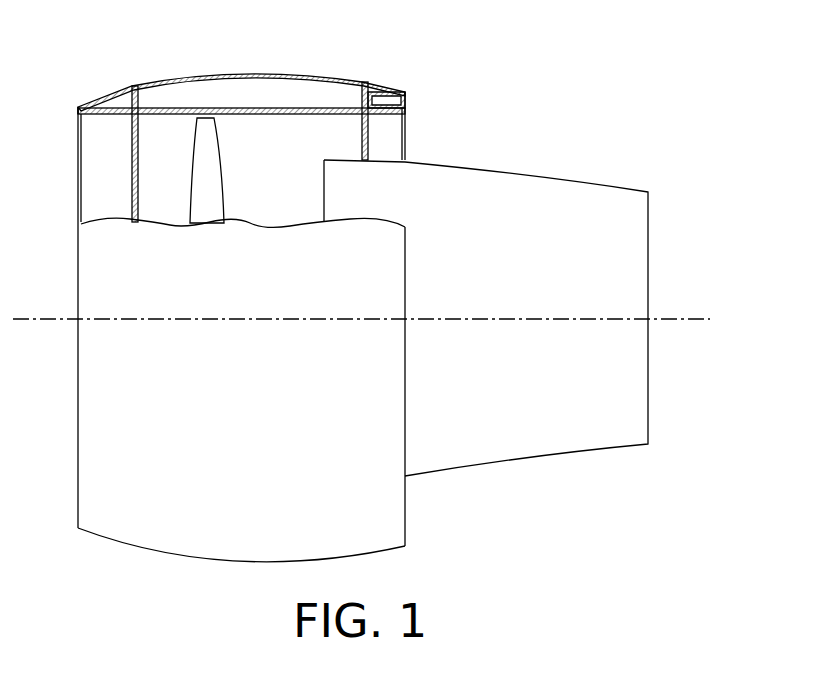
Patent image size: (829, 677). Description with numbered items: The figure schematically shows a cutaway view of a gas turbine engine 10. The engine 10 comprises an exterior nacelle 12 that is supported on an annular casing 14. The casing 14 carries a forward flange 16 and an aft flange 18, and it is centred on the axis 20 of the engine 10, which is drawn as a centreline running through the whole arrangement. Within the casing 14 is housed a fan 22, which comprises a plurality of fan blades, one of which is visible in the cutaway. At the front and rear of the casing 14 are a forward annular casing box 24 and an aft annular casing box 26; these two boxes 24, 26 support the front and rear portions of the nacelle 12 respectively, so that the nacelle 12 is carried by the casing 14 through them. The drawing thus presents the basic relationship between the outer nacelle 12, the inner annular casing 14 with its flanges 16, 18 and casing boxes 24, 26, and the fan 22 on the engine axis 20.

The gas turbine engine 10 is at (497, 73).
The exterior nacelle 12 is at (400, 520).
The annular casing 14 is at (293, 118).
The forward flange 16 is at (143, 88).
The aft flange 18 is at (352, 88).
The axis 20 is at (33, 322).
The fan 22 is at (224, 186).
The forward annular casing box 24 is at (106, 96).
The aft annular casing box 26 is at (390, 95).